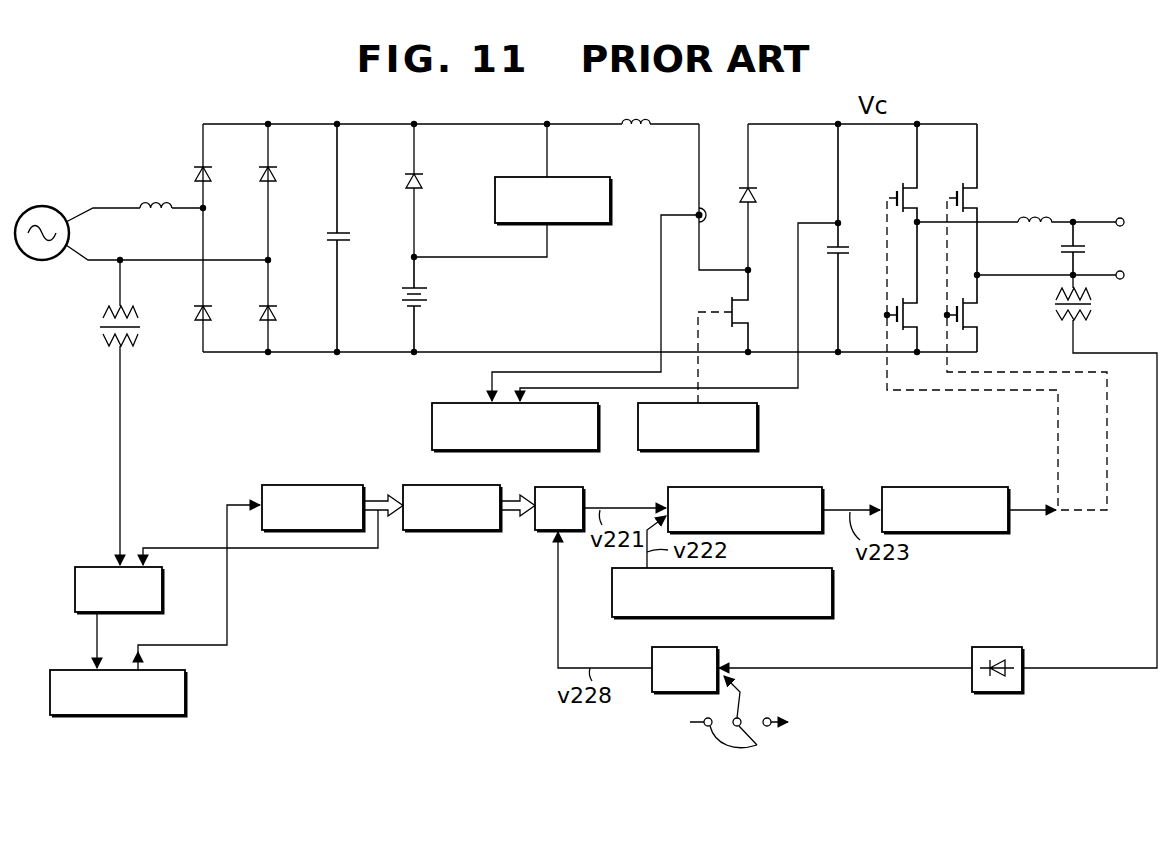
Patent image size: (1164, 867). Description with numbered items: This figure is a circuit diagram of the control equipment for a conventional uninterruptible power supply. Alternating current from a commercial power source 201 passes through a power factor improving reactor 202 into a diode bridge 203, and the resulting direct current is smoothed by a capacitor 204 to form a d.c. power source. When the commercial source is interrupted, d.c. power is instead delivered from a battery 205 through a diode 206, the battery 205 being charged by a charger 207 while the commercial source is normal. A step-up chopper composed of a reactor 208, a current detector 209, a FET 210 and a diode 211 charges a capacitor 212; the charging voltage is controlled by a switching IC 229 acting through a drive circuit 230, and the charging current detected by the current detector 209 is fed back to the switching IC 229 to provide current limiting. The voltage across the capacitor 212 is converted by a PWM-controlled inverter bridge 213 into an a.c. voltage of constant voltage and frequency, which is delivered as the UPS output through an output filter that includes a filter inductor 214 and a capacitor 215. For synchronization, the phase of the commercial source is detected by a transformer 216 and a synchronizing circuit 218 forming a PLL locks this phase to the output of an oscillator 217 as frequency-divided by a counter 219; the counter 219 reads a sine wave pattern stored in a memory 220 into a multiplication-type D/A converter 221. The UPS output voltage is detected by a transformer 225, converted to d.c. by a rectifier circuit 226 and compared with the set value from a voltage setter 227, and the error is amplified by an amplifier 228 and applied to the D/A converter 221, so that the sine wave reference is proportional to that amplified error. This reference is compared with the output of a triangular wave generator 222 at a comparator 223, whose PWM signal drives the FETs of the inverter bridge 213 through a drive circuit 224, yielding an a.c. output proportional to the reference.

The commercial power source 201 is at (42, 207).
The power factor improving reactor 202 is at (155, 205).
The diode bridge 203 is at (237, 124).
The capacitor 204 is at (370, 225).
The battery 205 is at (428, 298).
The diode 206 is at (427, 173).
The charger 207 is at (593, 177).
The reactor 208 is at (648, 126).
The current detector 209 is at (696, 212).
The FET 210 is at (732, 304).
The diode 211 is at (750, 186).
The capacitor 212 is at (868, 231).
The inverter bridge 213 is at (960, 123).
The output inductor 214 is at (1034, 215).
The capacitor 215 is at (1060, 248).
The transformer 216 is at (108, 312).
The oscillator 217 is at (62, 670).
The synchronizing circuit 218 is at (90, 567).
The counter 219 is at (300, 485).
The memory 220 is at (432, 485).
The D/A converter 221 is at (576, 487).
The triangular wave generator 222 is at (833, 598).
The comparator 223 is at (773, 487).
The drive circuit 224 is at (948, 487).
The transformer 225 is at (1095, 302).
The rectifier circuit 226 is at (1015, 647).
The voltage setter 227 is at (752, 722).
The amplifier 228 is at (707, 647).
The switching IC 229 is at (470, 403).
The drive circuit 230 is at (757, 412).